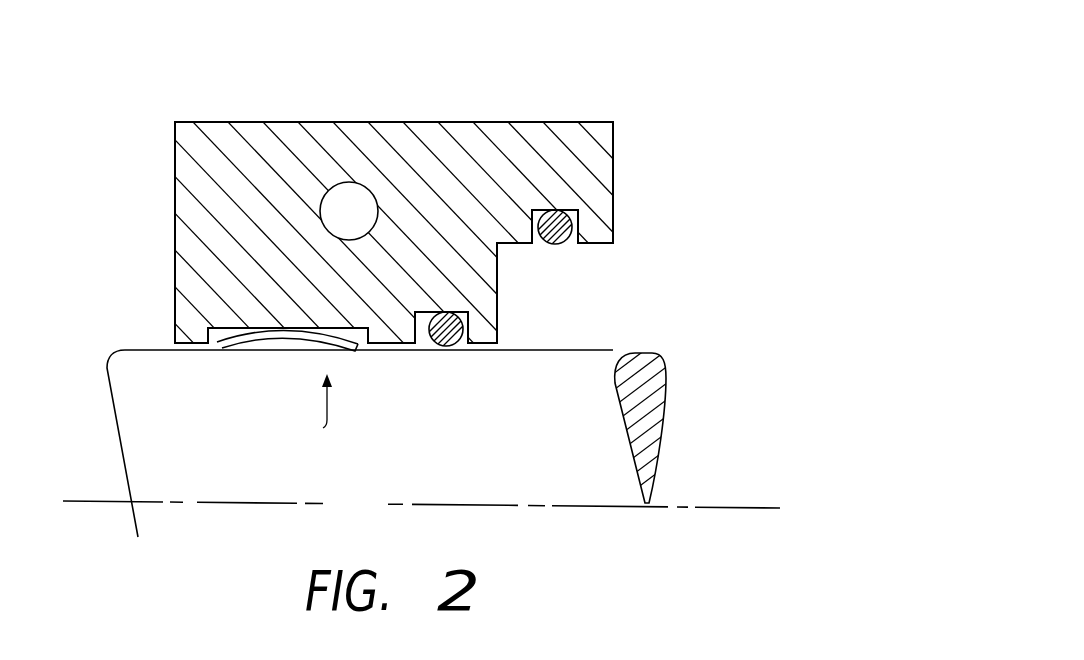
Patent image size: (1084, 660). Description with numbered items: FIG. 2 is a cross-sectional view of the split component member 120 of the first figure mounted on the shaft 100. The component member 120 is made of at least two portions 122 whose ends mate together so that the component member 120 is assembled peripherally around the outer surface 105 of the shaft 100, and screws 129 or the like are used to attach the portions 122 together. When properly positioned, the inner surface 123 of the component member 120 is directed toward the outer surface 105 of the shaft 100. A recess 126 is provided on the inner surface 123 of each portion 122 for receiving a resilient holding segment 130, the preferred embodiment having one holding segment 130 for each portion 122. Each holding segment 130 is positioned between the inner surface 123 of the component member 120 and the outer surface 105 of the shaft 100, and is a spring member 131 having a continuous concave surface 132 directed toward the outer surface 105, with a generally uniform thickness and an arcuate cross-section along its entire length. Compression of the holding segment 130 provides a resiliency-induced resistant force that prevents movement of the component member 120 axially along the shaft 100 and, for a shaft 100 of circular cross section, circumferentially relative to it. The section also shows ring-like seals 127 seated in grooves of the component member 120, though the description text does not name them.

The shaft 100 is at (646, 426).
The outer surface of the shaft 105 is at (607, 352).
The component member 120 is at (645, 62).
The portion 122 is at (507, 143).
The inner surface 123 is at (180, 345).
The recess 126 is at (81, 271).
The O-ring seal 127 is at (556, 245).
The screw 129 is at (336, 186).
The holding segment 130 is at (354, 407).
The spring member 131 is at (292, 326).
The concave surface 132 is at (245, 341).